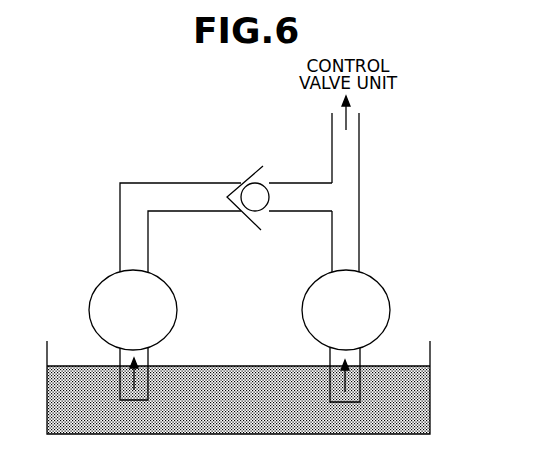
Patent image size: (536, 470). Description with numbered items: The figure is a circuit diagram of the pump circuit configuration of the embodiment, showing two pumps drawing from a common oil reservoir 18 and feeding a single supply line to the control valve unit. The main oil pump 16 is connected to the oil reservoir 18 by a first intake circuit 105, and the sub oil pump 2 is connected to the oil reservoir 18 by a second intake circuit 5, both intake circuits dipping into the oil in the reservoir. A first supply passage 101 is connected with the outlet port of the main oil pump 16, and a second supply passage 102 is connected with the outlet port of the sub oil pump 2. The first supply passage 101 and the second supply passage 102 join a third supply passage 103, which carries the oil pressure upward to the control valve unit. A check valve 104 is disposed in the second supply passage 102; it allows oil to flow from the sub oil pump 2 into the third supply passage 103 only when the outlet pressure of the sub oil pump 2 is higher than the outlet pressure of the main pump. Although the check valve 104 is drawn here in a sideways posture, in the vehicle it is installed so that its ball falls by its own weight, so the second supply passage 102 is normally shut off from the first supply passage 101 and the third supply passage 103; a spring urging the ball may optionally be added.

The sub oil pump 2 is at (95, 283).
The second intake circuit 5 is at (110, 352).
The main oil pump 16 is at (375, 277).
The oil reservoir 18 is at (430, 402).
The first supply passage 101 is at (360, 240).
The second supply passage 102 is at (165, 178).
The third supply passage 103 is at (360, 146).
The check valve 104 is at (266, 180).
The first intake circuit 105 is at (362, 357).